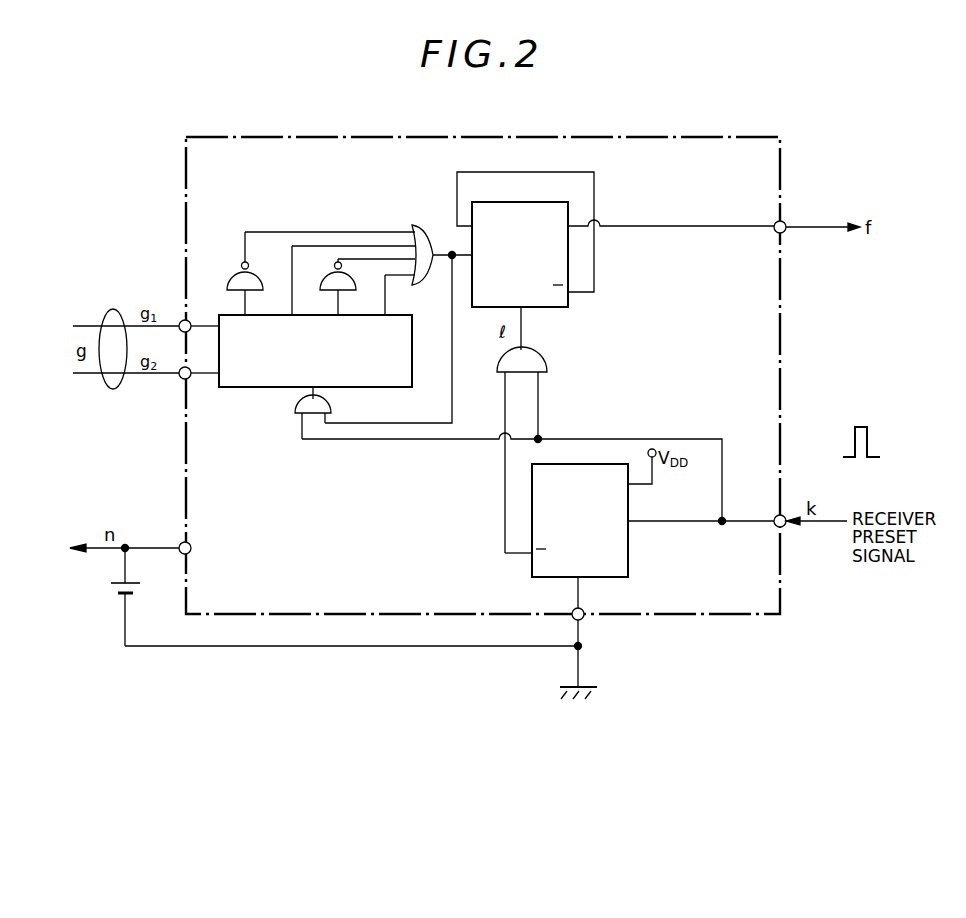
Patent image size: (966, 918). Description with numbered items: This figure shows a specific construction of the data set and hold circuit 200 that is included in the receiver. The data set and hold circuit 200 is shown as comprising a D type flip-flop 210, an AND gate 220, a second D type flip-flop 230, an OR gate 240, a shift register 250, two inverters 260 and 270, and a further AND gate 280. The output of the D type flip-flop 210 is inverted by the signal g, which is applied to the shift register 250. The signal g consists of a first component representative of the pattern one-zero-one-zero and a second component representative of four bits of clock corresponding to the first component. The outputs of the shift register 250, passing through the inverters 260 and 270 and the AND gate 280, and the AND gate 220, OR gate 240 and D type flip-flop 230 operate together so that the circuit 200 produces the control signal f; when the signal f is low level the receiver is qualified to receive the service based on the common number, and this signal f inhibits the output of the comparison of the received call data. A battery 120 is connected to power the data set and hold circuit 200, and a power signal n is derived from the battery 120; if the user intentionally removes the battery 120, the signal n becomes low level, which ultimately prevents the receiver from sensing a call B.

The data set and hold circuit 200 is at (784, 193).
The D type flip-flop 210 is at (568, 307).
The AND gate 220 is at (549, 355).
The D type flip-flop 230 is at (628, 561).
The OR gate 240 is at (334, 407).
The shift register 250 is at (250, 387).
The inverter 260 is at (240, 275).
The inverter 270 is at (337, 262).
The AND gate 280 is at (423, 226).
The battery 120 is at (112, 597).